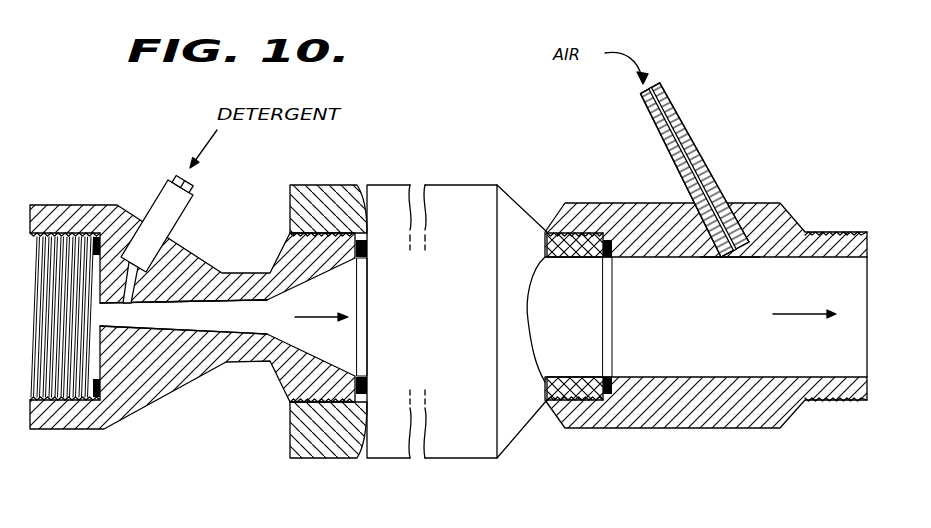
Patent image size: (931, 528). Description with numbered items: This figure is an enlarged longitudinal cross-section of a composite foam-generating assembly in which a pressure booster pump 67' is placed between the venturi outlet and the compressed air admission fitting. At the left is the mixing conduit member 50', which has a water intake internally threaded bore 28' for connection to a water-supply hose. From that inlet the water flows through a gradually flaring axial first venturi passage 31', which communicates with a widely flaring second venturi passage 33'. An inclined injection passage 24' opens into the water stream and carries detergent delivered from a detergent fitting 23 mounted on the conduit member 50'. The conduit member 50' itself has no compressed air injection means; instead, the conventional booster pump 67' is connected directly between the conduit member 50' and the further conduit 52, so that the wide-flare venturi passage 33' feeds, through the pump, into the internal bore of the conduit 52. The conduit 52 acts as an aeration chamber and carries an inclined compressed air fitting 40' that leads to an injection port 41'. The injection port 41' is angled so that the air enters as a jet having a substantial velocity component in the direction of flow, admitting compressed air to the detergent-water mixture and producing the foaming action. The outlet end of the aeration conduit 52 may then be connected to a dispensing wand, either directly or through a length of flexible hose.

The water intake internally threaded bore 28' is at (65, 281).
The detergent fitting 23 is at (158, 207).
The first venturi passage 31' is at (208, 244).
The inclined injection passage 24' is at (183, 298).
The second venturi passage 33' is at (328, 321).
The booster pump 67' is at (457, 294).
The compressed air fitting 40' is at (666, 170).
The injection port 41' is at (750, 205).
The conduit member 50' is at (192, 346).
The conduit 52 is at (653, 428).